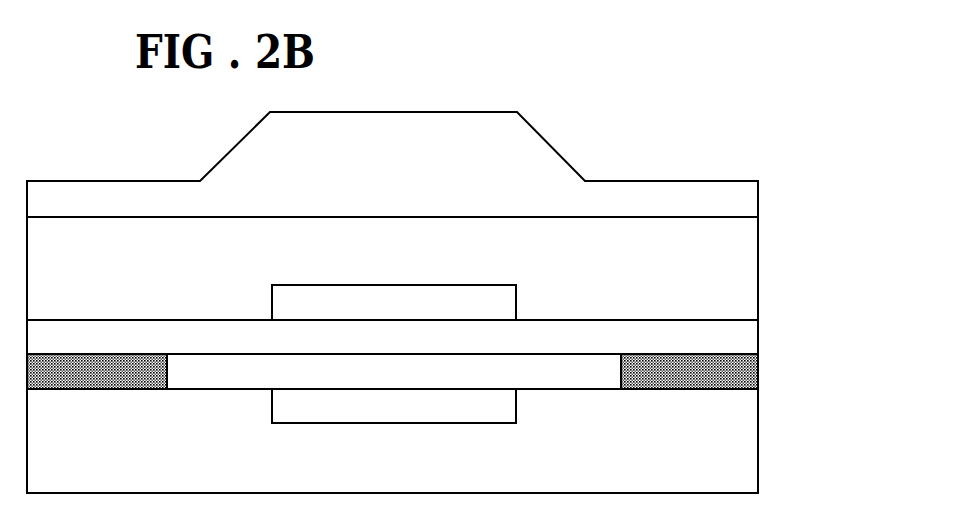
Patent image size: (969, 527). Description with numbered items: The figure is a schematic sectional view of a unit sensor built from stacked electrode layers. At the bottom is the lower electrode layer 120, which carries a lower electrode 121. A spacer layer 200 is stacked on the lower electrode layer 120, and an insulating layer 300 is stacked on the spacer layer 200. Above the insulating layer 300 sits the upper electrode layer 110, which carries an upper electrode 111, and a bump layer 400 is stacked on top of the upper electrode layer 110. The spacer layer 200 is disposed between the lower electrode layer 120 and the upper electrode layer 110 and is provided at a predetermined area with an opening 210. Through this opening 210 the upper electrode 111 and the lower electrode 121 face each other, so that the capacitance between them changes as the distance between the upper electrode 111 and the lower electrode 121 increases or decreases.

The bump layer 400 is at (758, 200).
The upper electrode layer 110 is at (758, 268).
The upper electrode 111 is at (505, 307).
The insulating layer 300 is at (758, 333).
The spacer layer 200 is at (758, 370).
The opening 210 is at (235, 380).
The lower electrode layer 120 is at (758, 435).
The lower electrode 121 is at (510, 415).